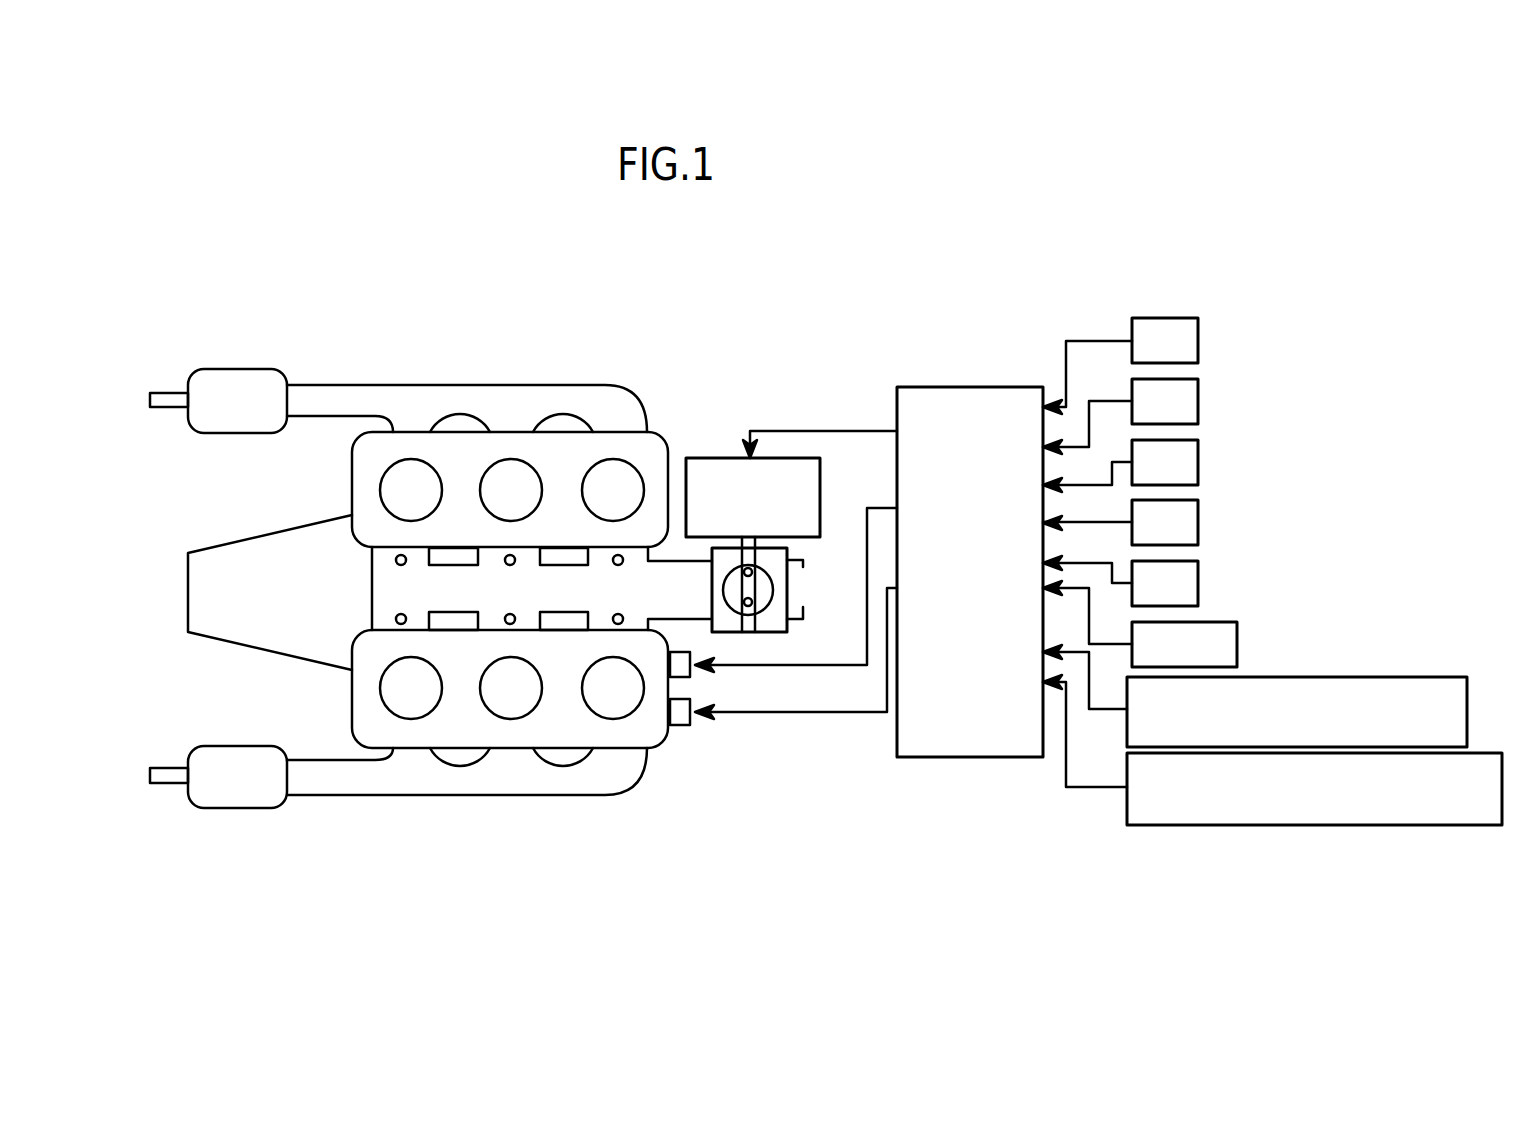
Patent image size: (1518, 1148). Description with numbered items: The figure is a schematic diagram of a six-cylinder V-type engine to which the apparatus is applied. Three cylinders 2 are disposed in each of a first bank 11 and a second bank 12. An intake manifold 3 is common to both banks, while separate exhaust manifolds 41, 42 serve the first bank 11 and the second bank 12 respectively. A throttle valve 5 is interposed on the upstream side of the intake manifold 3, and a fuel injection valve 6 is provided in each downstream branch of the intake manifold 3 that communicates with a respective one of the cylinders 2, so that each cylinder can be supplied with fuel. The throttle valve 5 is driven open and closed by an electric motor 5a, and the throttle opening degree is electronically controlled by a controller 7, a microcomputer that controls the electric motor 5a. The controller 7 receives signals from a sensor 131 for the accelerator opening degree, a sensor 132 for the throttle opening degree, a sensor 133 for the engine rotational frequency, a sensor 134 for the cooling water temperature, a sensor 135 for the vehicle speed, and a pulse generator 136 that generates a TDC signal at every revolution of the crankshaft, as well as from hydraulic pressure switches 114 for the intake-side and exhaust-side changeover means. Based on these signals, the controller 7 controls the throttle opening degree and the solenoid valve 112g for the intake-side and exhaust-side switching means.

The second bank 12 is at (555, 457).
The first bank 11 is at (557, 730).
The cylinders 2 is at (490, 463).
The fuel injection valve 6 is at (397, 617).
The exhaust manifold 42 is at (319, 402).
The exhaust manifold 41 is at (339, 773).
The intake manifold 3 is at (668, 583).
The electric motor 5a is at (753, 458).
The throttle valve 5 is at (762, 583).
The controller 7 is at (950, 387).
The solenoid valve 112g is at (690, 653).
The sensor 131 is at (1198, 341).
The sensor 132 is at (1198, 401).
The sensor 133 is at (1198, 462).
The sensor 134 is at (1198, 522).
The sensor 135 is at (1198, 583).
The pulse generator 136 is at (1225, 633).
The hydraulic pressure switches 114 is at (1132, 816).